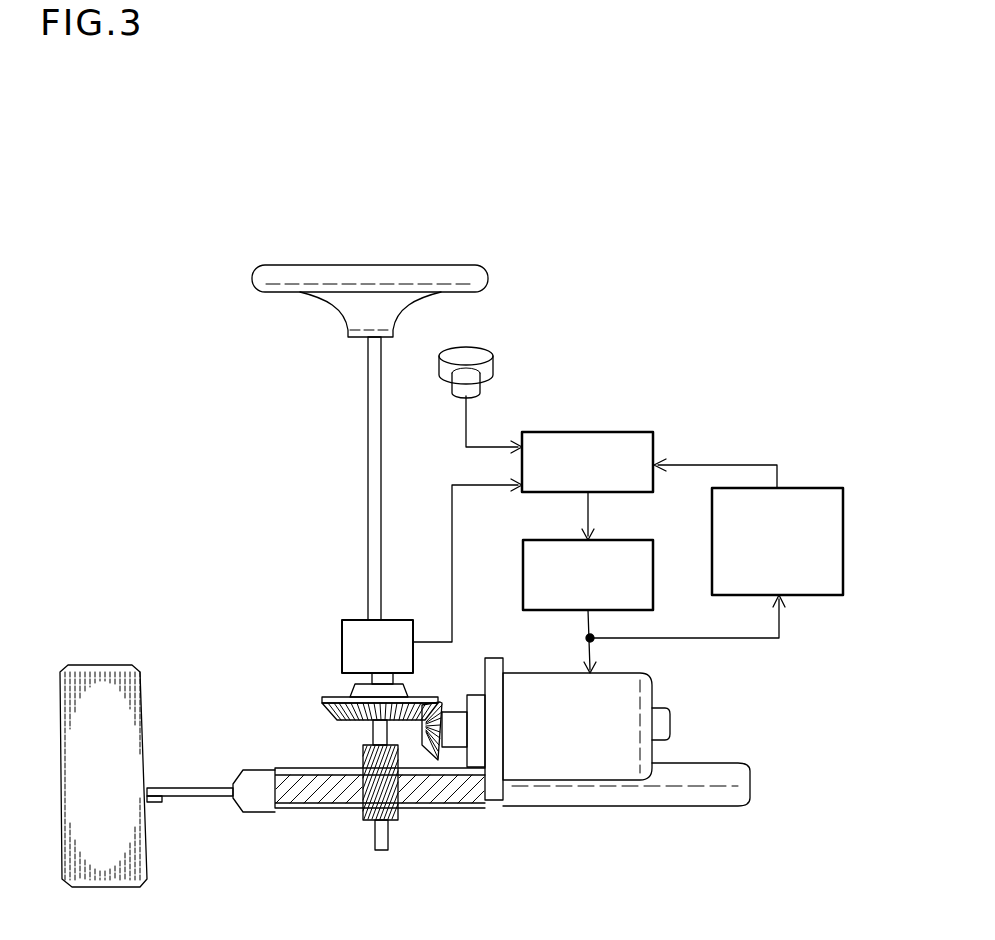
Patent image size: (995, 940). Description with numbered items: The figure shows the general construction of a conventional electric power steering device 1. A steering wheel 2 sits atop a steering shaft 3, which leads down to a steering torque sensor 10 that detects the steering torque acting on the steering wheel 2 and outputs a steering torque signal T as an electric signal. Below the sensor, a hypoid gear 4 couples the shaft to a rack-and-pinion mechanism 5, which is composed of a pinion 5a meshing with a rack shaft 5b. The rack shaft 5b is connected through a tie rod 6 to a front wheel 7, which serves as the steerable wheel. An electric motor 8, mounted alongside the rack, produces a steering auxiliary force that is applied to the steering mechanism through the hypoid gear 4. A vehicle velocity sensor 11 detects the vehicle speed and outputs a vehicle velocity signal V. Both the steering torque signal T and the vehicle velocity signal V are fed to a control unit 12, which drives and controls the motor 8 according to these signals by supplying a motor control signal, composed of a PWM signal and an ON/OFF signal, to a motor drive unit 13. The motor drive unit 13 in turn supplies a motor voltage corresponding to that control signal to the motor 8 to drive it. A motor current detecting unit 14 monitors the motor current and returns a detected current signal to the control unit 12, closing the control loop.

The electric power steering device 1 is at (398, 200).
The steering wheel 2 is at (417, 263).
The steering shaft 3 is at (368, 442).
The hypoid gear 4 is at (424, 752).
The rack-and-pinion mechanism 5 is at (353, 820).
The pinion 5a is at (405, 818).
The rack shaft 5b is at (693, 782).
The tie rod 6 is at (190, 797).
The front wheel 7 is at (100, 665).
The electric motor 8 is at (580, 742).
The steering torque sensor 10 is at (342, 648).
The vehicle velocity sensor 11 is at (479, 352).
The control unit 12 is at (612, 432).
The motor drive unit 13 is at (612, 540).
The motor current detecting unit 14 is at (800, 488).